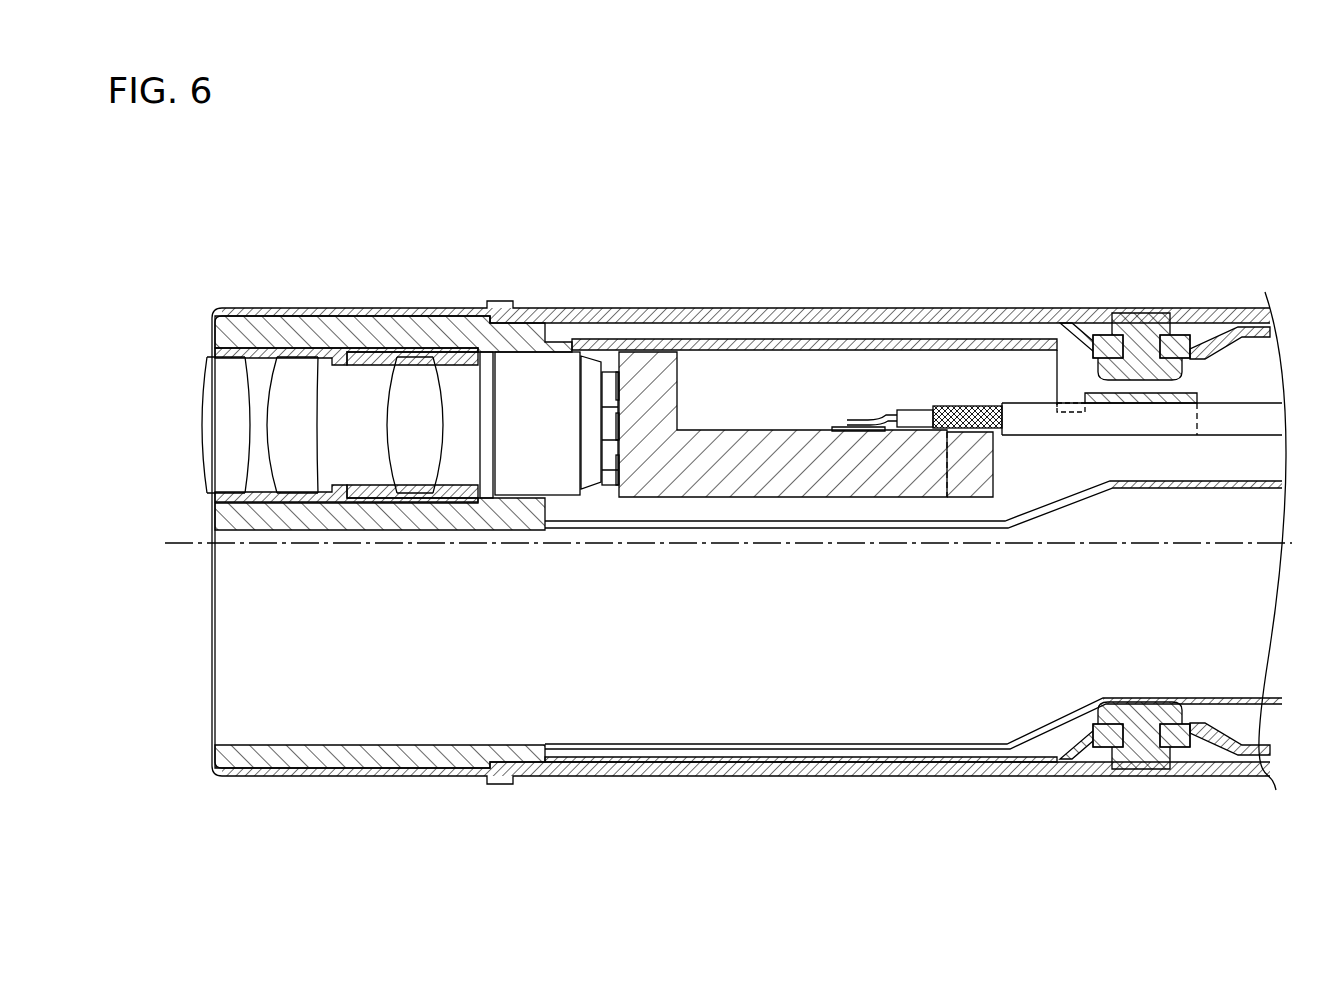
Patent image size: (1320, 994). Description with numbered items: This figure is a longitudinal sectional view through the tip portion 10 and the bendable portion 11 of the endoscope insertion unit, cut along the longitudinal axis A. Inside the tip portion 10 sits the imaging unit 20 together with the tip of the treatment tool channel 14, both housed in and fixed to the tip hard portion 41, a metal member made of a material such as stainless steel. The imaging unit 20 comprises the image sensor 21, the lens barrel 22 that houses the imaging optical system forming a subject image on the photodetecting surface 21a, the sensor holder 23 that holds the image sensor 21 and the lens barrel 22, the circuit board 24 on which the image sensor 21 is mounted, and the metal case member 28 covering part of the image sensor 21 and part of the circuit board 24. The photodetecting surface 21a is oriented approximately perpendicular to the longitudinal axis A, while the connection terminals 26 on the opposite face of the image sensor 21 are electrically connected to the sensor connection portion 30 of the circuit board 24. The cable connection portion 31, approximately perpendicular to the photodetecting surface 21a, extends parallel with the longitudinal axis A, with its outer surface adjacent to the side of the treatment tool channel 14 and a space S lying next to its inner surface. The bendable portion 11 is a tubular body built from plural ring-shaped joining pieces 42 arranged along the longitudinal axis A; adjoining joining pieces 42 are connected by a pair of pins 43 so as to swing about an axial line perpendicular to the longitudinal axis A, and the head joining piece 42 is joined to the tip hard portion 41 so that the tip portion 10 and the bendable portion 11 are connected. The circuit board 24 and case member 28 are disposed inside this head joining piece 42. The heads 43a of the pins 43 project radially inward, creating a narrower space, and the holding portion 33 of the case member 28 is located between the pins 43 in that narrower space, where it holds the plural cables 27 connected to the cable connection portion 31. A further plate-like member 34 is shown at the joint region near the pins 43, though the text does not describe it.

The tip portion 10 is at (225, 306).
The bendable portion 11 is at (1264, 780).
The treatment tool channel 14 is at (230, 653).
The imaging unit 20 is at (308, 238).
The image sensor 21 is at (533, 380).
The photodetecting surface 21a is at (491, 412).
The lens barrel 22 is at (324, 347).
The sensor holder 23 is at (385, 356).
The circuit board 24 is at (705, 275).
The connection terminals 26 is at (608, 386).
The cables 27 is at (1240, 410).
The case member 28 is at (1057, 238).
The sensor connection portion 30 is at (650, 340).
The cable connection portion 31 is at (702, 430).
The holding portion 33 is at (1088, 386).
The support plate 34 is at (985, 337).
The tip hard portion 41 is at (263, 311).
The joining pieces 42 is at (756, 307).
The pins 43 is at (1157, 330).
The heads 43a is at (1127, 323).
The longitudinal axis A is at (717, 544).
The space S is at (895, 382).